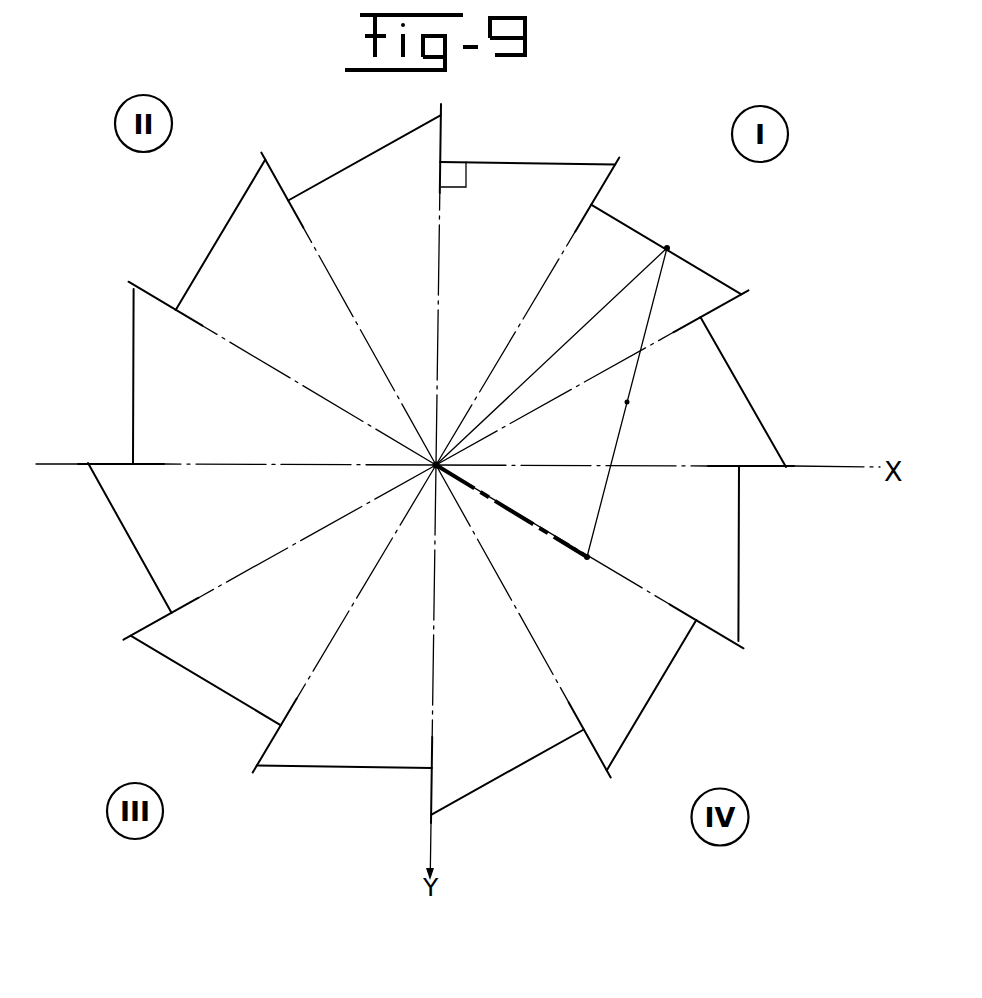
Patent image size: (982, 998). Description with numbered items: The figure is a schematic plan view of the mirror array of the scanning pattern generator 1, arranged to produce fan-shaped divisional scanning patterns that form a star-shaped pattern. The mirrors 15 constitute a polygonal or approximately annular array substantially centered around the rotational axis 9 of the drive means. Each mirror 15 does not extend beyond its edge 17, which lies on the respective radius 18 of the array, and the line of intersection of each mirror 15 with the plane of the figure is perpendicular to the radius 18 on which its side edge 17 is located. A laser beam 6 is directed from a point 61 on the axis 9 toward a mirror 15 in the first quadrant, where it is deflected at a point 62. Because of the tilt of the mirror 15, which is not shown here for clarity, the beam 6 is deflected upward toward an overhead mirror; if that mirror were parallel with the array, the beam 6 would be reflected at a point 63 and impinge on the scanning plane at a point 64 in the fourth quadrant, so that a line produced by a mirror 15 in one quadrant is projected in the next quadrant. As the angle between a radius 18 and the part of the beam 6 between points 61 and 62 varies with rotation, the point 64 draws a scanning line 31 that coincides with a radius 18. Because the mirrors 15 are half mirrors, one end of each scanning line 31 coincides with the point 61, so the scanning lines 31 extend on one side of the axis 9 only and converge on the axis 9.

The scanning pattern generator 1 is at (763, 288).
The laser beam 6 is at (576, 334).
The rotational axis 9 is at (427, 490).
The mirror 15 is at (548, 162).
The edge 17 is at (434, 160).
The radius 18 is at (438, 340).
The scanning line 31 is at (543, 536).
The point 61 is at (458, 462).
The point 62 is at (667, 249).
The point 63 is at (629, 404).
The point 64 is at (590, 556).